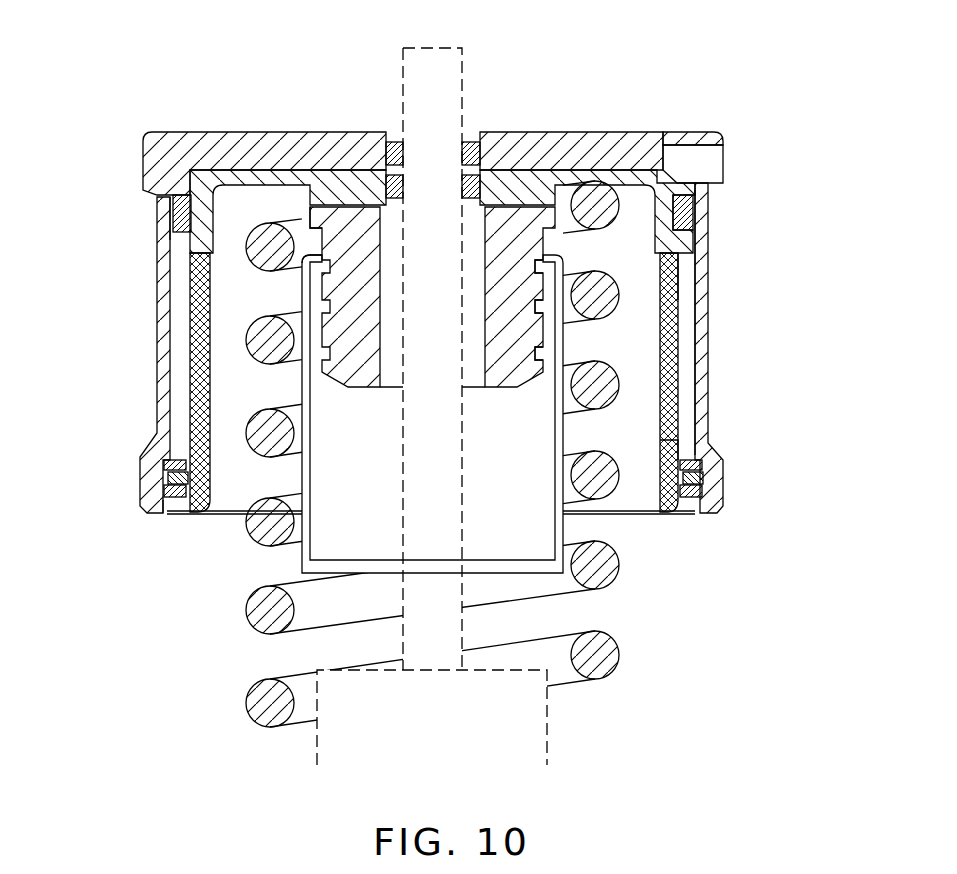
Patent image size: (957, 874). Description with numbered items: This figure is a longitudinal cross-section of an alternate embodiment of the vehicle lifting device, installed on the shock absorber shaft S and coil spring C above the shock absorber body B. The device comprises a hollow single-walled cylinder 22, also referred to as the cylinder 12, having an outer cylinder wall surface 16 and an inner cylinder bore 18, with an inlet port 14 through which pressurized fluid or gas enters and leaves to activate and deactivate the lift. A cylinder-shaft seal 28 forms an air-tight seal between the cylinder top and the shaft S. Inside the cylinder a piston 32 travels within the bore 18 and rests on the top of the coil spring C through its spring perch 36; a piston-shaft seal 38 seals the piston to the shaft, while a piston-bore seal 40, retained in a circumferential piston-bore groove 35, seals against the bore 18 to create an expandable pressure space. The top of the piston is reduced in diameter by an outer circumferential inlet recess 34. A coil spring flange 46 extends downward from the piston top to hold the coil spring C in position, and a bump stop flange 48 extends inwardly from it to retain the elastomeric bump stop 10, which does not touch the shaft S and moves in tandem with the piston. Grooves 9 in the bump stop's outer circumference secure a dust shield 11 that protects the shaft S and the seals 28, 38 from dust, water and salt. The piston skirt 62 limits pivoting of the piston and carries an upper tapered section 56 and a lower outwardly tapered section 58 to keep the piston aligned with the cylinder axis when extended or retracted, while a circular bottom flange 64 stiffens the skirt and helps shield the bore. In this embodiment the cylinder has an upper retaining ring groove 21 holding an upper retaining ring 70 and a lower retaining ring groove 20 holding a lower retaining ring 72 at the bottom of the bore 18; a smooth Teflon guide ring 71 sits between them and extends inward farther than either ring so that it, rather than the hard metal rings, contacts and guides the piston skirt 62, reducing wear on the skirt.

The bump stop grooves 9 is at (535, 348).
The bump stop 10 is at (493, 390).
The dust shield 11 is at (298, 551).
The cylinder 12 is at (240, 148).
The inlet port 14 is at (728, 140).
The outer cylinder wall surface 16 is at (710, 297).
The cylinder bore 18 is at (695, 390).
The lower retaining ring groove 20 is at (700, 484).
The upper retaining ring groove 21 is at (700, 465).
The cylinder 22 is at (645, 130).
The cylinder-shaft seal 28 is at (463, 147).
The piston 32 is at (557, 185).
The inlet recess 34 is at (182, 182).
The piston-bore groove 35 is at (685, 205).
The spring perch 36 is at (192, 252).
The piston-shaft seal 38 is at (470, 187).
The piston-bore seal 40 is at (177, 203).
The coil spring flange 46 is at (295, 248).
The bump stop flange 48 is at (315, 223).
The tapered section 56 is at (680, 273).
The outwardly tapered section 58 is at (681, 457).
The piston skirt 62 is at (190, 391).
The circular bottom flange 64 is at (178, 508).
The upper retaining ring 70 is at (167, 463).
The guide ring 71 is at (177, 478).
The lower retaining ring 72 is at (173, 500).
The shock absorber shaft S is at (448, 77).
The shock absorber body B is at (550, 703).
The coil spring C is at (592, 293).